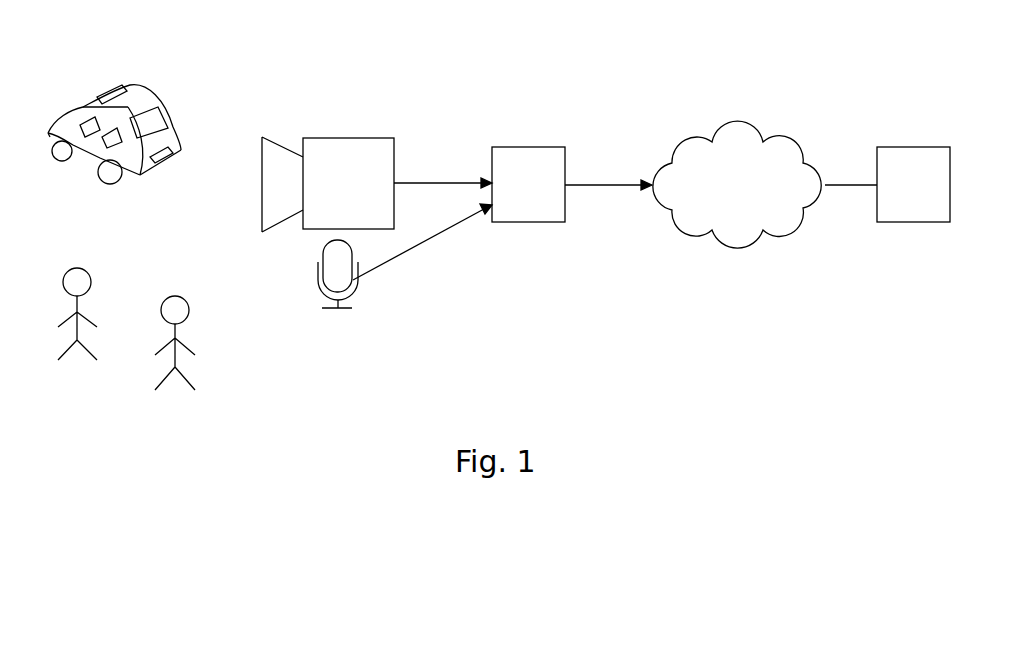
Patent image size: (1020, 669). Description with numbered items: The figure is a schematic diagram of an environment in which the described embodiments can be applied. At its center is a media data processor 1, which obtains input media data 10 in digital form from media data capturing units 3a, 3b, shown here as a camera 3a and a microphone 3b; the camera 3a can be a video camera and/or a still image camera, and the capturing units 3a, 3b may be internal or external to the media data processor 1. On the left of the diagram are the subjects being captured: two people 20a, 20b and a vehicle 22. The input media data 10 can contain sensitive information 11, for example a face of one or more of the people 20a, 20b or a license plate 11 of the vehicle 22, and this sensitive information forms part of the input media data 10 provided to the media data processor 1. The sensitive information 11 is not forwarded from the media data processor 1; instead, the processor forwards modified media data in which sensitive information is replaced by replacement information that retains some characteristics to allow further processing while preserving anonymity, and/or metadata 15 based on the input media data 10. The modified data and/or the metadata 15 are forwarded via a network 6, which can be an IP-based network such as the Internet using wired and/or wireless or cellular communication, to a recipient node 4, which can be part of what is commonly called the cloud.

The media data processor 1 is at (528, 184).
The camera 3a is at (342, 138).
The microphone 3b is at (338, 280).
The recipient node 4 is at (887, 184).
The network 6 is at (737, 184).
The input media data 10 is at (427, 183).
The sensitive information 11 is at (178, 135).
The metadata 15 is at (595, 182).
The person 20a is at (75, 268).
The person 20b is at (173, 297).
The vehicle 22 is at (127, 87).